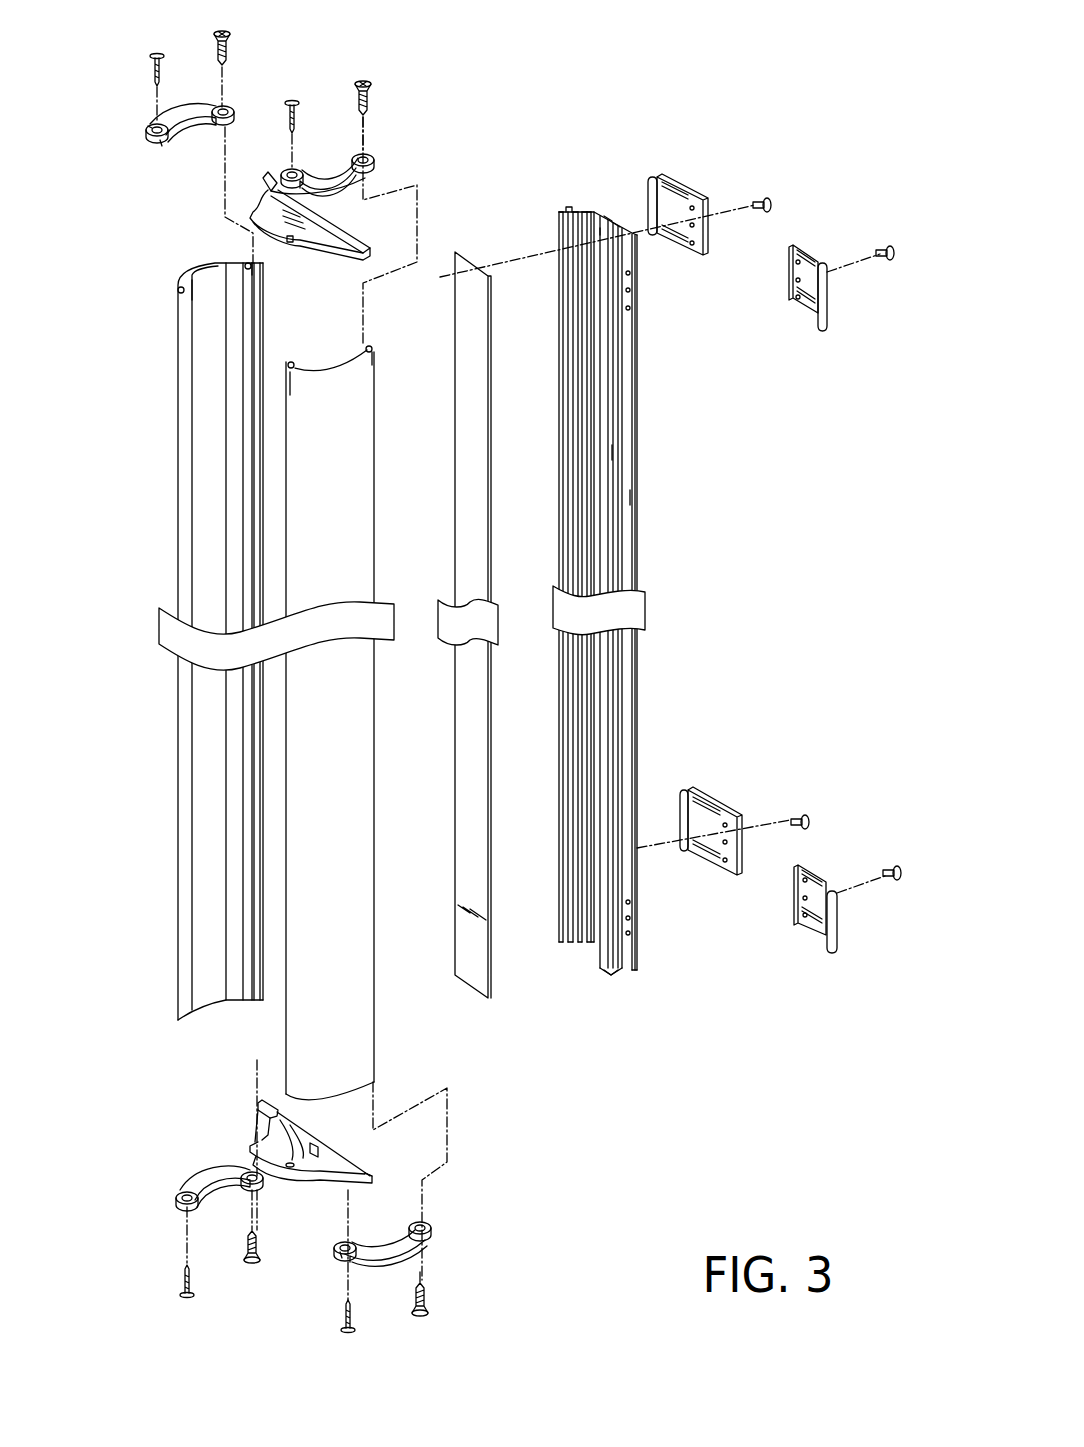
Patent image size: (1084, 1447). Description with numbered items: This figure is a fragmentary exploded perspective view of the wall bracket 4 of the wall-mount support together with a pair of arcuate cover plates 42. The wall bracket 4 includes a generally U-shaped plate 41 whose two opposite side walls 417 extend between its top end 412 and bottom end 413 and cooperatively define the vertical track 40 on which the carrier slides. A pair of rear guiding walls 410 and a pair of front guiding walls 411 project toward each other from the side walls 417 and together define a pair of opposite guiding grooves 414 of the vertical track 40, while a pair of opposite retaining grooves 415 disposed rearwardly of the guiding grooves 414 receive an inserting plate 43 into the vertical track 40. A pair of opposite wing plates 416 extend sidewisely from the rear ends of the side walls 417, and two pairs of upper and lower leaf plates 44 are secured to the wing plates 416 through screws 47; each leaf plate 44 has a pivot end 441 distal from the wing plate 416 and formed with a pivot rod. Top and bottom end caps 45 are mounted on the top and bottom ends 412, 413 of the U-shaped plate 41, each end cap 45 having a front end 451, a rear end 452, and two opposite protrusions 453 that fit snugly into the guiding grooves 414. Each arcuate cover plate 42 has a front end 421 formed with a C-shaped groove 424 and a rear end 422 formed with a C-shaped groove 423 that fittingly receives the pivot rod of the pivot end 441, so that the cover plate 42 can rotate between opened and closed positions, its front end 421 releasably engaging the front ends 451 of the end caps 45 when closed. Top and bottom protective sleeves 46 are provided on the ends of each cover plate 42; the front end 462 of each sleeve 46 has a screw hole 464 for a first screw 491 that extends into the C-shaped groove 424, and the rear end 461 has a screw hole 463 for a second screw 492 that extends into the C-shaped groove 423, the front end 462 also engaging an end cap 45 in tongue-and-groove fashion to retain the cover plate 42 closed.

The wall bracket 4 is at (498, 679).
The vertical track 40 is at (594, 581).
The U-shaped plate 41 is at (594, 581).
The rear guiding walls 410 is at (580, 212).
The front guiding walls 411 is at (563, 213).
The top end 412 is at (608, 218).
The bottom end 413 is at (615, 973).
The guiding grooves 414 is at (577, 208).
The retaining grooves 415 is at (588, 208).
The wing plates 416 is at (583, 210).
The side walls 417 is at (612, 453).
The arcuate cover plate 42 is at (266, 646).
The front end 421 is at (188, 305).
The rear end 422 is at (247, 262).
The C-shaped groove 423 is at (249, 262).
The C-shaped groove 424 is at (184, 290).
The inserting plate 43 is at (477, 520).
The upper and lower leaf plates 44 is at (794, 590).
The pivot end 441 is at (653, 192).
The end caps 45 is at (336, 698).
The front end 451 is at (288, 242).
The rear end 452 is at (275, 182).
The protrusions 453 is at (303, 1150).
The protective sleeves 46 is at (295, 672).
The rear end 461 is at (235, 113).
The front end 462 is at (165, 142).
The screw hole 463 is at (222, 108).
The screw hole 464 is at (147, 107).
The screws 47 is at (760, 198).
The first screw 491 is at (157, 57).
The second screw 492 is at (222, 32).